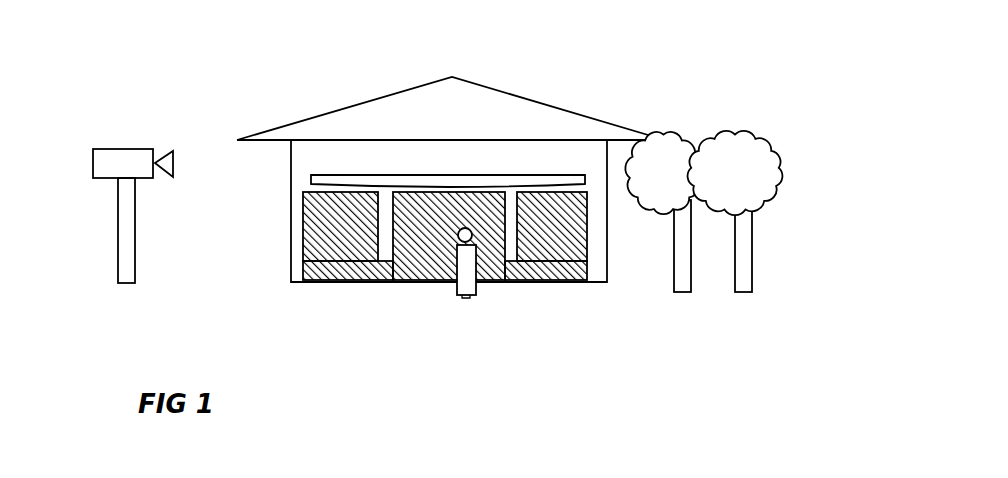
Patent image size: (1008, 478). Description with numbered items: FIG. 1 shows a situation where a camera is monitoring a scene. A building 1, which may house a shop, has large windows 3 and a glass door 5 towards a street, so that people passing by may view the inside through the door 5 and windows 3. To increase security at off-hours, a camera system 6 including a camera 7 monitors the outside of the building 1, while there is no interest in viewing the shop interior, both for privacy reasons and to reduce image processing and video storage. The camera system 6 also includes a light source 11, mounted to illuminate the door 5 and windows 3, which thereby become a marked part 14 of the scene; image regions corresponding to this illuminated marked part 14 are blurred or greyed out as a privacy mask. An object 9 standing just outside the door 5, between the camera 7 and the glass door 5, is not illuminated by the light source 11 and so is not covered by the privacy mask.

The building 1 is at (586, 162).
The windows 3 is at (303, 232).
The glass door 5 is at (460, 213).
The camera system 6 is at (222, 98).
The camera 7 is at (121, 149).
The object 9 is at (461, 296).
The light source 11 is at (475, 175).
The marked part 14 is at (308, 268).